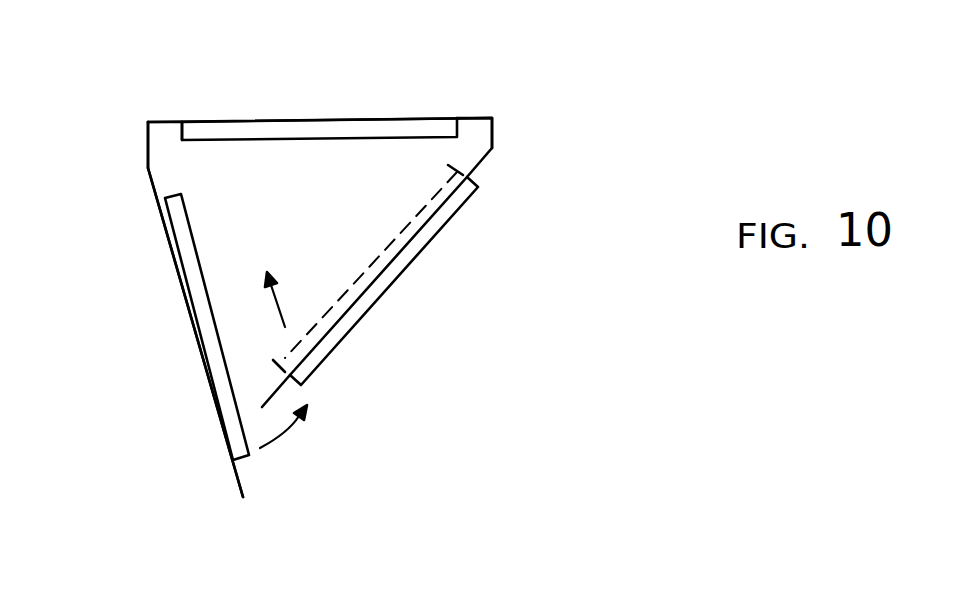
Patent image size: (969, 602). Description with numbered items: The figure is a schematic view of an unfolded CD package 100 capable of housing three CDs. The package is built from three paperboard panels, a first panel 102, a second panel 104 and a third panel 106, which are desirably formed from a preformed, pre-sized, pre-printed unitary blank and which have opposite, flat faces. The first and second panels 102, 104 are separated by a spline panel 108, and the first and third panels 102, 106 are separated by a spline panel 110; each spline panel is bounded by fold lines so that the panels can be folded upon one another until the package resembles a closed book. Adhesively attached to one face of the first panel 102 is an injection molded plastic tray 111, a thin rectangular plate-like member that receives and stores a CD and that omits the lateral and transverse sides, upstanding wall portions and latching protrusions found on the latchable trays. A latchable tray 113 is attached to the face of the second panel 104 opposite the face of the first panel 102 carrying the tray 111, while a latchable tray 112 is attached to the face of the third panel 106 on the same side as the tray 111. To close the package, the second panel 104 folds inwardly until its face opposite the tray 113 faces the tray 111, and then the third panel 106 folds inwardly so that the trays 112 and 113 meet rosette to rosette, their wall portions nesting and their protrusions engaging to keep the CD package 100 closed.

The CD package 100 is at (556, 136).
The first panel 102 is at (474, 117).
The second panel 104 is at (478, 177).
The third panel 106 is at (193, 332).
The spline panel 108 is at (492, 133).
The spline panel 110 is at (148, 137).
The injection molded plastic tray 111 is at (330, 140).
The latchable tray 112 is at (193, 274).
The latchable tray 113 is at (358, 315).